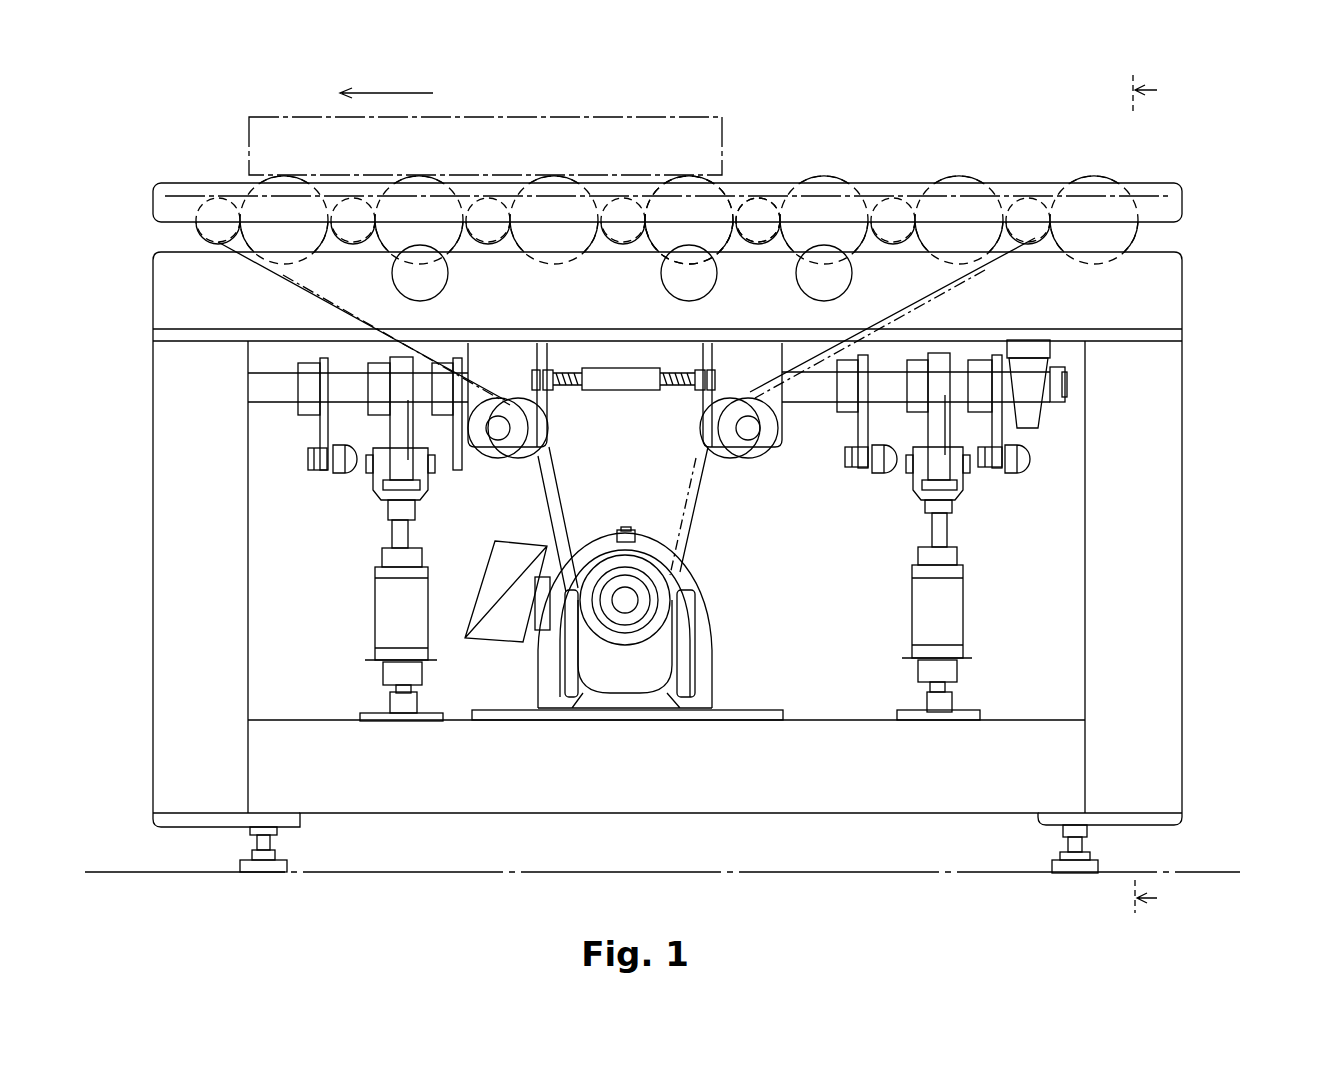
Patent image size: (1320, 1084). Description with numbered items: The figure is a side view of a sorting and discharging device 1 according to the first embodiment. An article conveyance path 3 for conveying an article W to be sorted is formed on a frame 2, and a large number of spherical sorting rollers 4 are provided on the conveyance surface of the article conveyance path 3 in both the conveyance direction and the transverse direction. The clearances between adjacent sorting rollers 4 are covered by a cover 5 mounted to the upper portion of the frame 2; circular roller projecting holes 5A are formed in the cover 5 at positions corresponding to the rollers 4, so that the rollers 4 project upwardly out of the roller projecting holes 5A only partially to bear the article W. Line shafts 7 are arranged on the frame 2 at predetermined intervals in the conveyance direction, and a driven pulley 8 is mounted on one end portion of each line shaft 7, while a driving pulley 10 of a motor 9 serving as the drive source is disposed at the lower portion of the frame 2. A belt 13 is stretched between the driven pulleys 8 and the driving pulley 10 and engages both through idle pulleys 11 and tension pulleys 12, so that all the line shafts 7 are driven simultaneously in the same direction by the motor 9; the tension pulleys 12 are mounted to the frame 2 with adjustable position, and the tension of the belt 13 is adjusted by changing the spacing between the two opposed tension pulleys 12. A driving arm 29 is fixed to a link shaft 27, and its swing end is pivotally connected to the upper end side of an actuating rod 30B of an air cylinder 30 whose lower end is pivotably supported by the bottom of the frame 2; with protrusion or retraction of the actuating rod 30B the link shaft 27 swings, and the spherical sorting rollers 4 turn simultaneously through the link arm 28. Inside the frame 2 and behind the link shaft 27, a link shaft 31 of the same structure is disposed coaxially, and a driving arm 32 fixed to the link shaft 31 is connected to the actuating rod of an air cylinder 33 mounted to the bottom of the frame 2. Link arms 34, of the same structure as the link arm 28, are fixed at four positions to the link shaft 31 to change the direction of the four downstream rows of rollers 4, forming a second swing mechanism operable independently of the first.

The article W is at (248, 132).
The sorting and discharging device 1 is at (1228, 358).
The frame 2 is at (1160, 507).
The article conveyance path 3 is at (925, 164).
The spherical sorting rollers 4 is at (825, 175).
The cover 5 is at (1152, 195).
The roller projecting holes 5A is at (853, 183).
The line shafts 7 is at (753, 200).
The driven pulley 8 is at (757, 240).
The motor 9 is at (708, 587).
The driving pulley 10 is at (663, 620).
The idle pulleys 11 is at (672, 287).
The tension pulleys 12 is at (487, 443).
The belt 13 is at (943, 287).
The link shaft 27 is at (815, 397).
The link arm 28 is at (995, 428).
The driving arm 29 is at (935, 427).
The air cylinder 30 is at (953, 625).
The actuating rod 30B is at (950, 510).
The link shaft 31 is at (280, 400).
The driving arm 32 is at (397, 427).
The air cylinder 33 is at (378, 617).
The link arms 34 is at (322, 430).